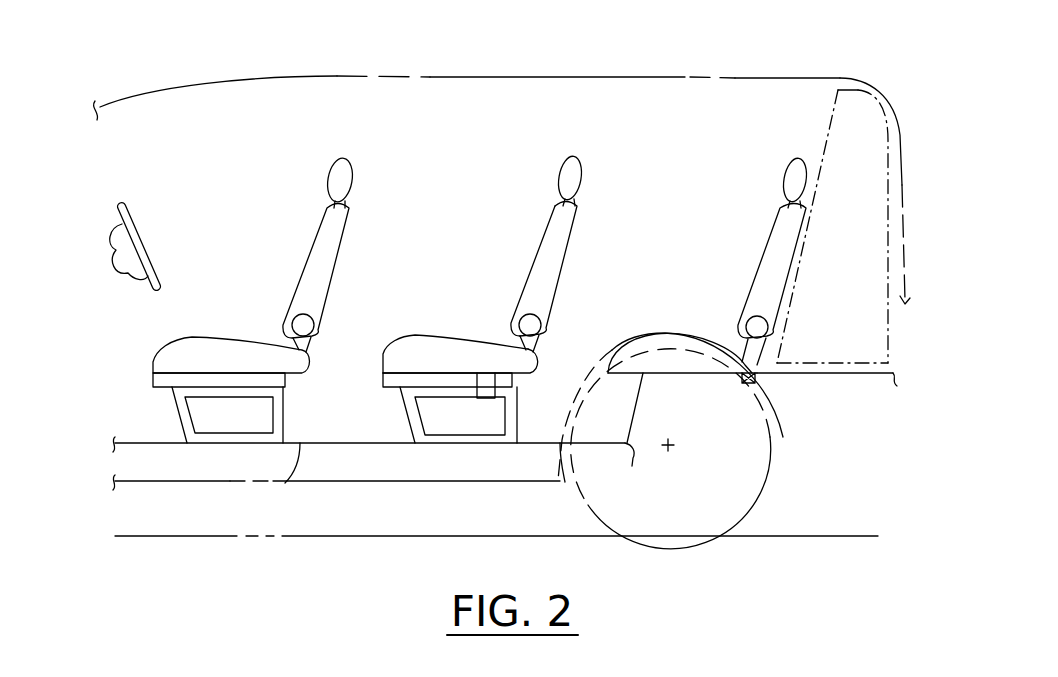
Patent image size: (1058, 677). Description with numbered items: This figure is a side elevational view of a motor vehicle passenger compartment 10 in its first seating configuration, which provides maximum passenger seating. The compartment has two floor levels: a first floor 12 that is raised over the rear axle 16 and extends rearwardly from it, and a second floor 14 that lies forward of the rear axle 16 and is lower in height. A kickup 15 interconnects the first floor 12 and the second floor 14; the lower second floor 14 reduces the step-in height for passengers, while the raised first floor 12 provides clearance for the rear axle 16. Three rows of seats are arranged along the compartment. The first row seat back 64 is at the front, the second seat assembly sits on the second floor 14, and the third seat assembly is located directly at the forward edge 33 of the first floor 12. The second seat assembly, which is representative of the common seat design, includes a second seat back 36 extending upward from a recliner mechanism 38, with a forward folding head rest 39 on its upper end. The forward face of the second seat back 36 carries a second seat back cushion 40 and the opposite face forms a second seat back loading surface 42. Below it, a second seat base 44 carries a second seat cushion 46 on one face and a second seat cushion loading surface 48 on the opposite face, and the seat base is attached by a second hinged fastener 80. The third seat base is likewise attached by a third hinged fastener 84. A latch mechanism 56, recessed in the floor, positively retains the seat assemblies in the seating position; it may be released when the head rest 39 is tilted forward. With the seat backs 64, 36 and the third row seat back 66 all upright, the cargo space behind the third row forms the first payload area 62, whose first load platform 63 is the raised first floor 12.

The passenger compartment 10 is at (625, 95).
The first floor 12 is at (843, 378).
The second floor 14 is at (290, 482).
The kickup 15 is at (623, 469).
The rear axle 16 is at (672, 447).
The forward edge of the first floor 33 is at (644, 376).
The second seat back 36 is at (552, 251).
The recliner mechanism 38 is at (534, 321).
The forward folding head rest 39 is at (578, 157).
The second seat back cushion 40 is at (527, 262).
The second seat back loading surface 42 is at (578, 229).
The second seat base 44 is at (460, 336).
The second seat cushion 46 is at (424, 345).
The second seat cushion loading surface 48 is at (525, 383).
The latch mechanism 56 is at (490, 397).
The first payload area 62 is at (840, 88).
The first load platform 63 is at (815, 362).
The first row seat back 64 is at (323, 205).
The third row seat back 66 is at (783, 207).
The second hinged fastener 80 is at (382, 377).
The third hinged fastener 84 is at (622, 378).